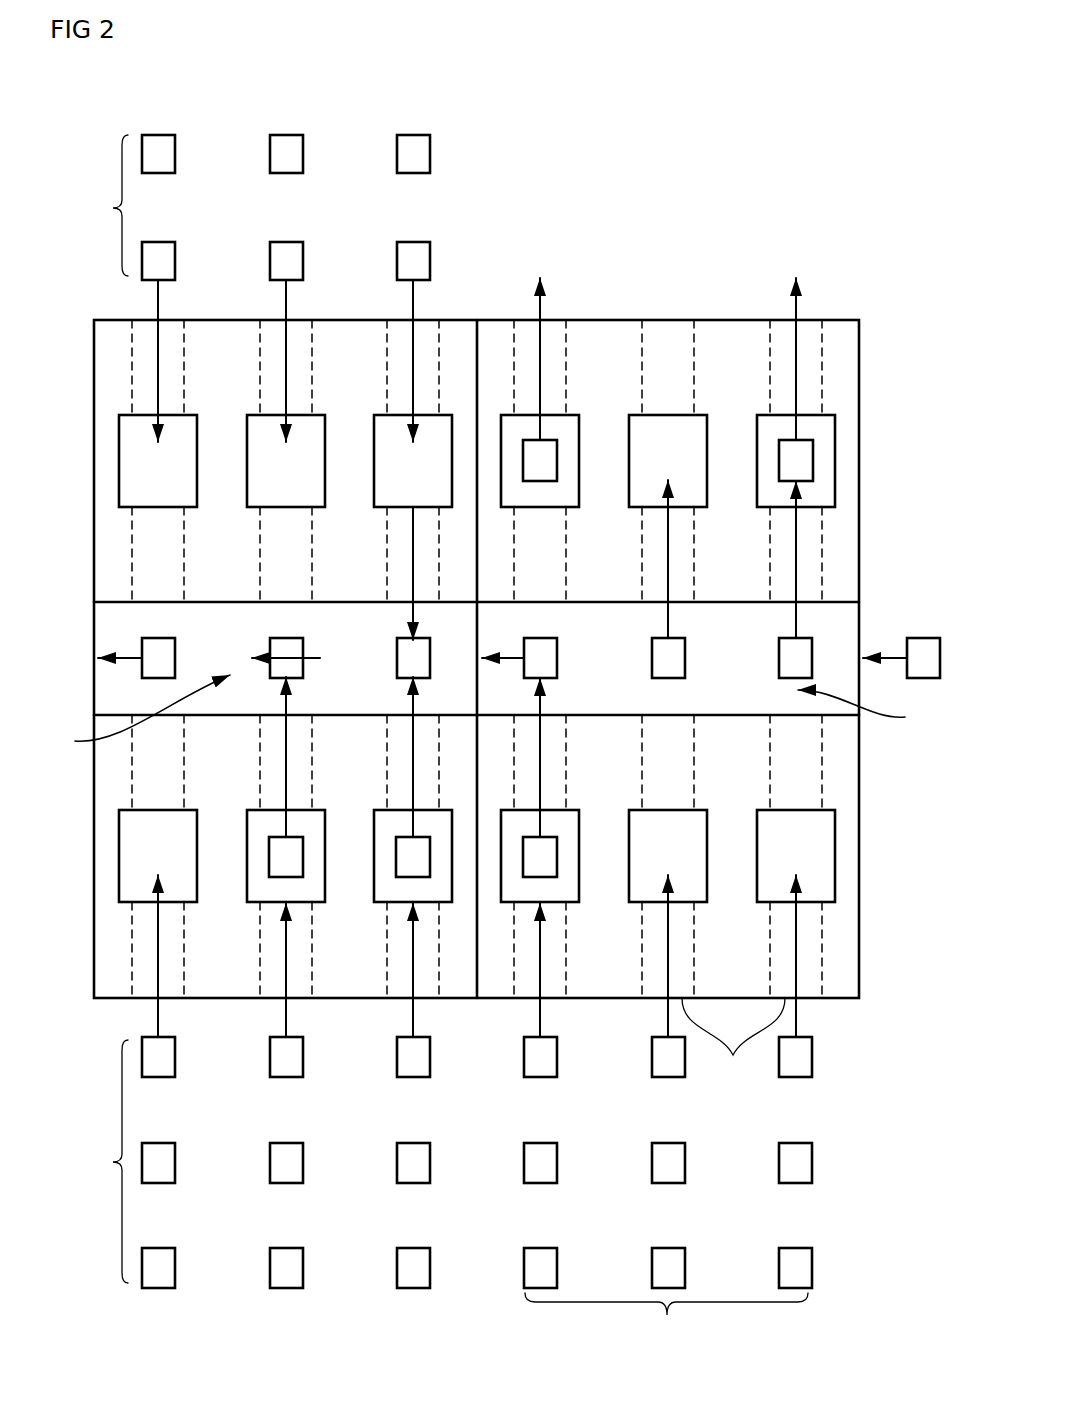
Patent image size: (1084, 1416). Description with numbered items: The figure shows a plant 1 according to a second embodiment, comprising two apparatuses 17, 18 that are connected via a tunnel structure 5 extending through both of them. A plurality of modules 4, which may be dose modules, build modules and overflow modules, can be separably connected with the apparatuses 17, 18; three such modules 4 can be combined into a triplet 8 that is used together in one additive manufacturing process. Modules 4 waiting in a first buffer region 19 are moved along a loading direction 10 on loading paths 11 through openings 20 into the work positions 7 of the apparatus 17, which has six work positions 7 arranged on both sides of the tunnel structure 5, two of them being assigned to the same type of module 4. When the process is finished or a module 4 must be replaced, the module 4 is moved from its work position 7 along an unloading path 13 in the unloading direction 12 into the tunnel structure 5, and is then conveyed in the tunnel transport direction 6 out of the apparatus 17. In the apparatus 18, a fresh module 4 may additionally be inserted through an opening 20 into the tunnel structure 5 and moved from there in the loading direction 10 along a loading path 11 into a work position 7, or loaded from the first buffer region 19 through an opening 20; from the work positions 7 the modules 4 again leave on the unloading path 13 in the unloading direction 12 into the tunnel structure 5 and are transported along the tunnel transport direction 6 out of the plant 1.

The plant 1 is at (736, 105).
The module 4 is at (160, 133).
The tunnel structure 5 is at (491, 715).
The tunnel transport direction 6 is at (295, 658).
The work position 7 is at (248, 433).
The triplet 8 is at (666, 1326).
The loading direction 10 is at (286, 295).
The loading path 11 is at (312, 353).
The unloading direction 12 is at (796, 308).
The unloading path 13 is at (820, 367).
The apparatus 17 is at (450, 285).
The apparatus 18 is at (811, 228).
The first buffer region 19 is at (101, 709).
The opening 20 is at (143, 318).